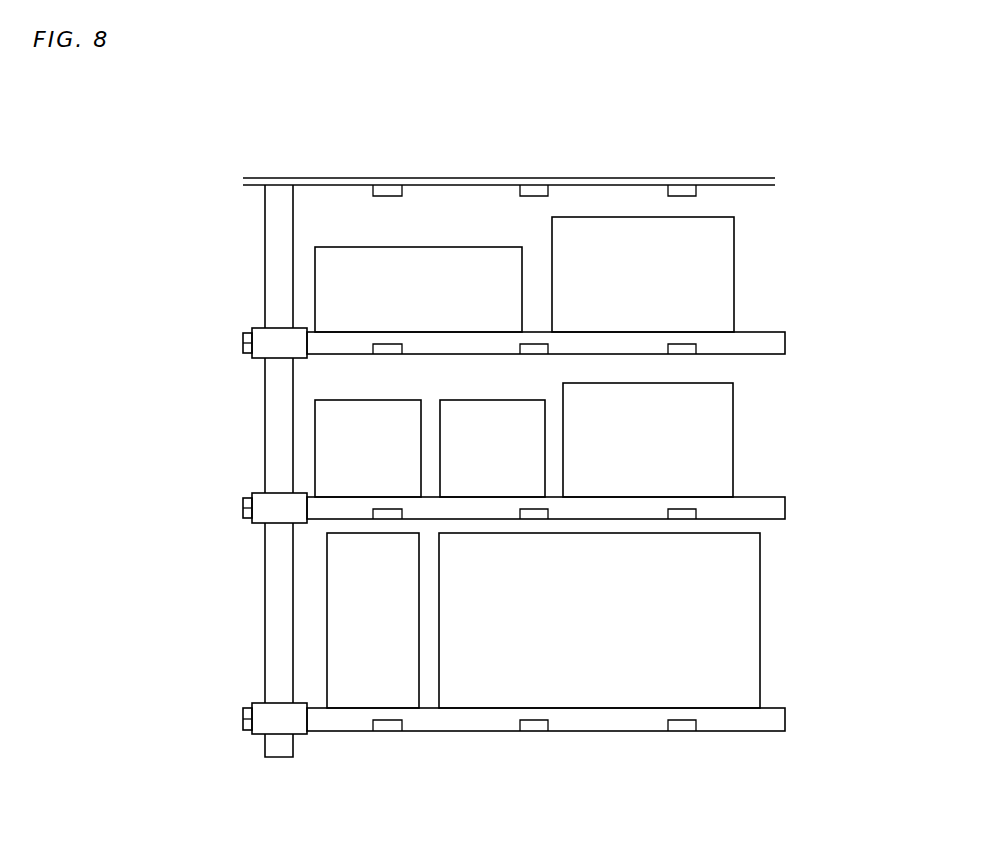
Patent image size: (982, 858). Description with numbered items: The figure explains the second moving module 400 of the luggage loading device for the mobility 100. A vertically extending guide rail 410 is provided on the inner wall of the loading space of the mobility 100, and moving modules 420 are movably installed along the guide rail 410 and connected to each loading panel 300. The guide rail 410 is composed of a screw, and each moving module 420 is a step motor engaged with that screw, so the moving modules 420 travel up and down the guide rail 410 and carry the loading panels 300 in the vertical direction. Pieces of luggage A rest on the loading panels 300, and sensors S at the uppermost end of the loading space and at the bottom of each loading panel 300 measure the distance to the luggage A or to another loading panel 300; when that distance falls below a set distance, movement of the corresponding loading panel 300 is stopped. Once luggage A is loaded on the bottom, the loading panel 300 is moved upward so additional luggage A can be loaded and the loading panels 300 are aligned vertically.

The mobility 100 is at (592, 178).
The loading panel 300 is at (773, 346).
The second moving module 400 is at (238, 476).
The guide rail 410 is at (275, 613).
The moving module 420 is at (243, 343).
The luggage A is at (453, 270).
The sensor S is at (388, 190).